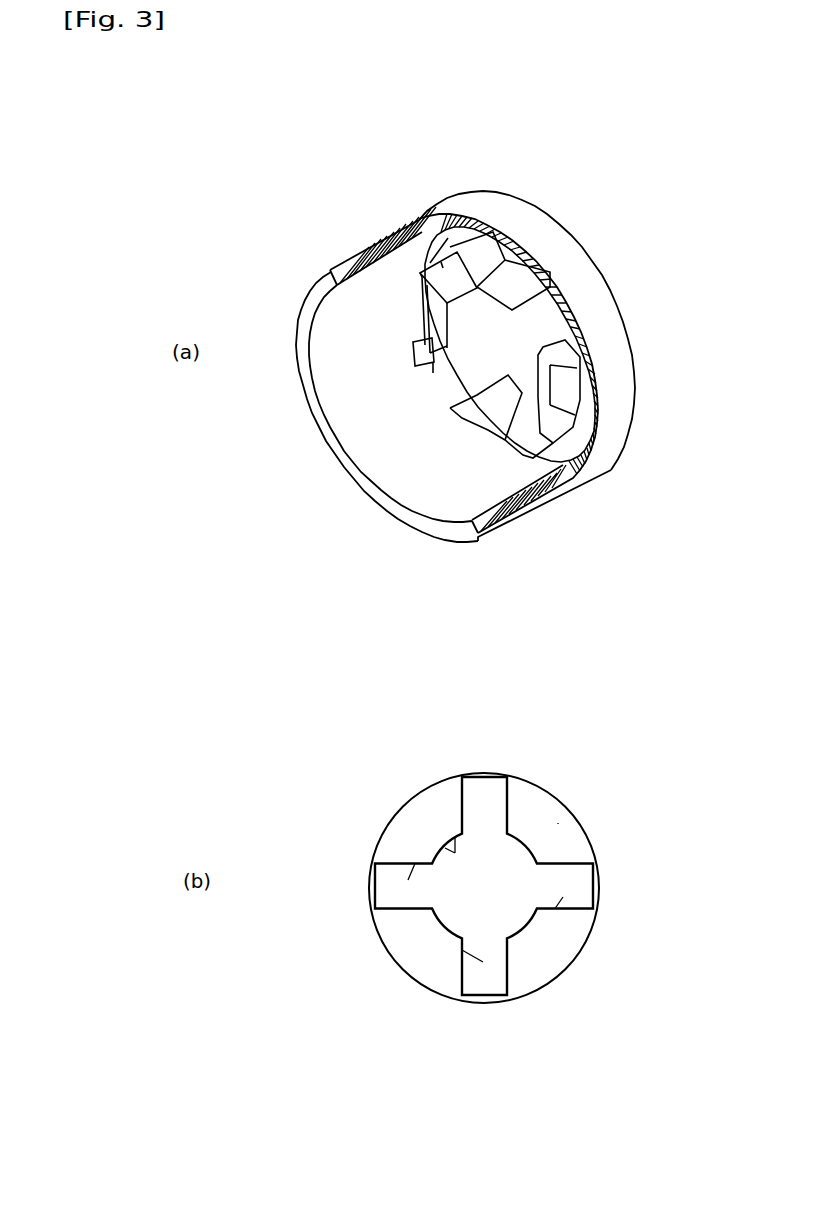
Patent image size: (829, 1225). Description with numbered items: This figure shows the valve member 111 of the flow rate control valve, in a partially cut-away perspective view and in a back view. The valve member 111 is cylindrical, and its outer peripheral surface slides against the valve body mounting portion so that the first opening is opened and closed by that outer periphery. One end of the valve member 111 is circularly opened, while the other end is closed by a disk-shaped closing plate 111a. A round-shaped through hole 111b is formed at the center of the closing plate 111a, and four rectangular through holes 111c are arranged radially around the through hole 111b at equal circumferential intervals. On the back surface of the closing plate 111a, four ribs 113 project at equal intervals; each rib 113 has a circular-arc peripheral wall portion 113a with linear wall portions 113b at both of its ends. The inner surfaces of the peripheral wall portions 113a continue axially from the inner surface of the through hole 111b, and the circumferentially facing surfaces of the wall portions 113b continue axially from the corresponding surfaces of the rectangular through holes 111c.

The valve member 111 is at (536, 201).
The closing plate 111a is at (558, 823).
The round-shaped through hole 111b is at (455, 853).
The rectangular through holes 111c is at (507, 804).
The ribs 113 is at (568, 357).
The circular-arc peripheral wall portion 113a is at (465, 327).
The linear wall portions 113b is at (443, 267).